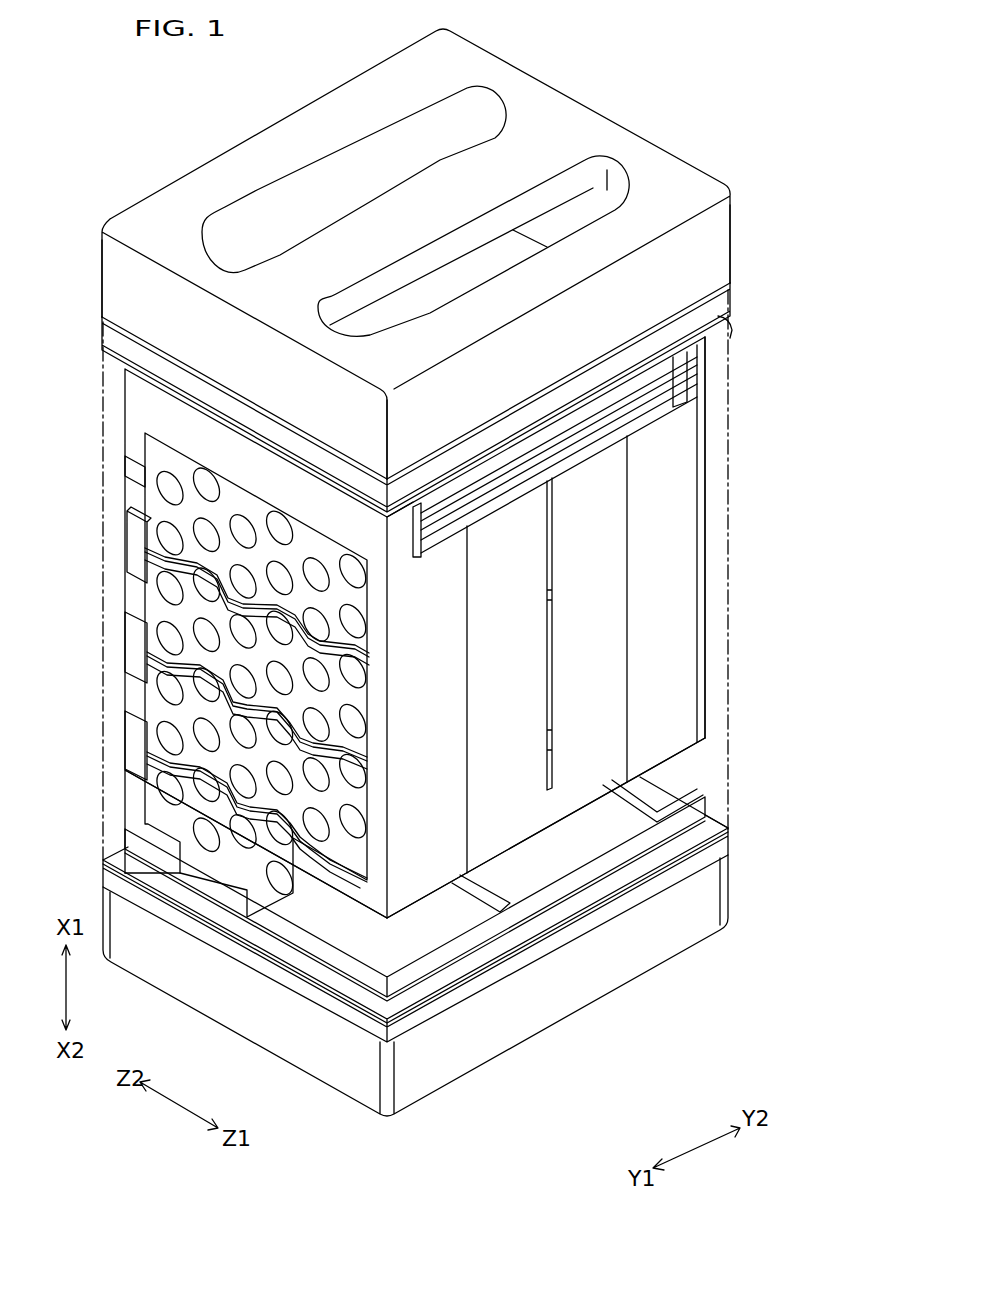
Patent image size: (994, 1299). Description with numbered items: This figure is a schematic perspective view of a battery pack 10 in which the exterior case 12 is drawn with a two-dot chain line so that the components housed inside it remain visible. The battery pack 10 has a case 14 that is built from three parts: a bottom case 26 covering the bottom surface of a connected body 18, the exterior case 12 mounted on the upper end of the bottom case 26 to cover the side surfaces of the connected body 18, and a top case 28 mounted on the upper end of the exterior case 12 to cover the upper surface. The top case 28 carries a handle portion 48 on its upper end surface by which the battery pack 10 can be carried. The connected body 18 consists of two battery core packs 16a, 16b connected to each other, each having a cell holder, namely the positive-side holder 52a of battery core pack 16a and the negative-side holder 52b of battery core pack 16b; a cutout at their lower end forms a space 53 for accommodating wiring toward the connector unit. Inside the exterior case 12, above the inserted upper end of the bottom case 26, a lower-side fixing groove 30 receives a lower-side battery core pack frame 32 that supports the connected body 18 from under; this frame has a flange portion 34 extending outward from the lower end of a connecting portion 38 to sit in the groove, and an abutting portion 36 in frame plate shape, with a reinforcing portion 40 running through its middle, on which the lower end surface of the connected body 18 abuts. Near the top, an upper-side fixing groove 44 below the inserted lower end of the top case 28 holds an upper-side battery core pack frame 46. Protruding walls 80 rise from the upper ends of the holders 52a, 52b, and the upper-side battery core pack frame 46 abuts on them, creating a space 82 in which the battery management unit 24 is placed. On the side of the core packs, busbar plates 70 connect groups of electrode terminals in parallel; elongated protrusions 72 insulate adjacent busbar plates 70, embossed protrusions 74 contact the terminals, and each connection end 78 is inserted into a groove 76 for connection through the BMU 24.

The battery pack 10 is at (704, 65).
The exterior case 12 is at (733, 441).
The case 14 is at (746, 189).
The battery core pack 16a is at (669, 786).
The battery core pack 16b is at (510, 887).
The connected body 18 is at (745, 990).
The battery management unit (BMU) 24 is at (643, 407).
The bottom case 26 is at (722, 893).
The top case 28 is at (720, 241).
The lower-side fixing groove 30 is at (725, 828).
The lower-side battery core pack frame 32 is at (712, 783).
The flange portion 34 is at (500, 963).
The abutting portion 36 is at (432, 963).
The connecting portion 38 is at (463, 967).
The reinforcing portion 40 is at (545, 857).
The upper-side fixing groove 44 is at (722, 311).
The upper-side battery core pack frame 46 is at (733, 340).
The handle portion 48 is at (400, 213).
The positive-side holder 52a is at (682, 507).
The negative-side holder 52b is at (613, 583).
The space 53 is at (361, 928).
The busbar plate 70 is at (181, 475).
The elongated protrusion 72 is at (237, 822).
The protrusion 74 is at (168, 537).
The groove 76 is at (133, 540).
The connection end 78 is at (130, 493).
The protruding wall 80 is at (402, 535).
The space 82 is at (590, 425).